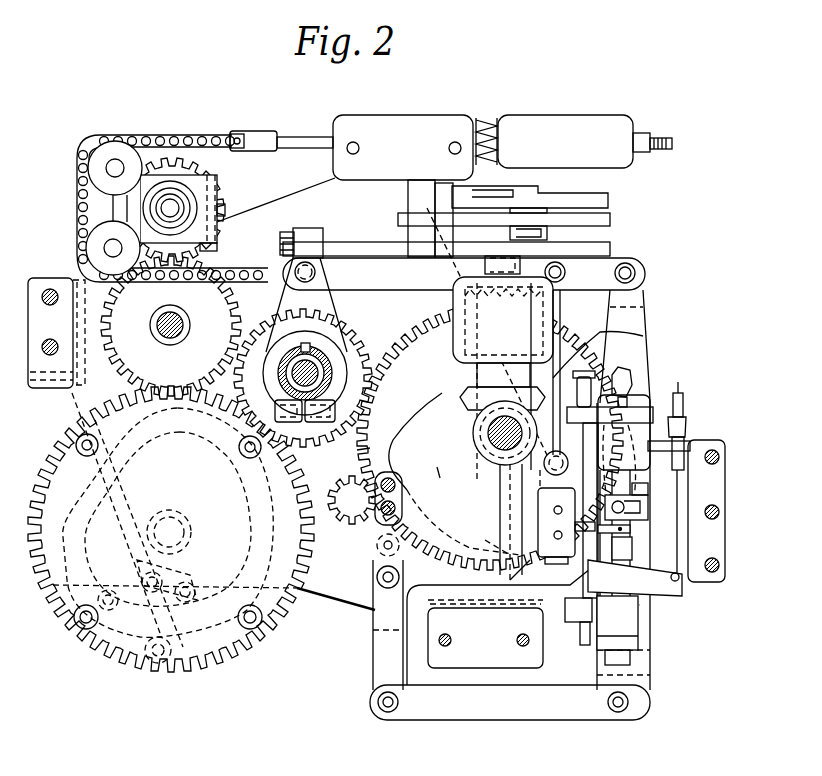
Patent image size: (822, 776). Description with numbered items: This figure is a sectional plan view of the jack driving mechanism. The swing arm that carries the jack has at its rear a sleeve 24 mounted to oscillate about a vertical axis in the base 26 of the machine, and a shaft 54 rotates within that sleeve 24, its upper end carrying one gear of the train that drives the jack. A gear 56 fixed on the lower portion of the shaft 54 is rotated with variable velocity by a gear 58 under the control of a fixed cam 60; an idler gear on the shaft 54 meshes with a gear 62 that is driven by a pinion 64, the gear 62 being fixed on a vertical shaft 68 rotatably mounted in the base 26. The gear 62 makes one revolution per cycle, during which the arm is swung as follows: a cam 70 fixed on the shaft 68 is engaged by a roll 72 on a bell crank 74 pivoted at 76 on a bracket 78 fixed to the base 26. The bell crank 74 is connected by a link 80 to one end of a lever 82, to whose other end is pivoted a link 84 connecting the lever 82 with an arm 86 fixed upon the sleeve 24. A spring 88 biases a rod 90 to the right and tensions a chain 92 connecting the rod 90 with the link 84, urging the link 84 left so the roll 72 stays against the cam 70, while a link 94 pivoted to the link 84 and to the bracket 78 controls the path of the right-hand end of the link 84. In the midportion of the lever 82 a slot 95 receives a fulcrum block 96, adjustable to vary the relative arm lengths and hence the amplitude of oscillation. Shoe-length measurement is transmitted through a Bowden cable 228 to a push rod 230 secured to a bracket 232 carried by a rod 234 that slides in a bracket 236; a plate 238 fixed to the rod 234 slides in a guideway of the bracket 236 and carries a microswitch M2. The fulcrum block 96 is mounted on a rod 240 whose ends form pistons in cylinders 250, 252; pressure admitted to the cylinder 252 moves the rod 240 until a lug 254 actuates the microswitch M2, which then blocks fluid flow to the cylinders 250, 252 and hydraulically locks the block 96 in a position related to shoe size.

The sleeve 24 is at (313, 360).
The base 26 is at (87, 398).
The shaft 54 is at (301, 368).
The gear 56 is at (378, 328).
The gear 58 is at (205, 672).
The fixed cam 60 is at (62, 591).
The gear 62 is at (357, 450).
The pinion 64 is at (348, 519).
The vertical shaft 68 is at (487, 432).
The cam 70 is at (442, 393).
The roll 72 is at (488, 540).
The bell crank 74 is at (374, 647).
The pivot 76 is at (372, 554).
The bracket 78 is at (437, 467).
The link 80 is at (538, 709).
The lever 82 is at (642, 301).
The link 84 is at (605, 267).
The arm 86 is at (316, 276).
The spring 88 is at (489, 119).
The rod 90 is at (303, 137).
The chain 92 is at (75, 199).
The link 94 is at (575, 336).
The slot 95 is at (650, 606).
The fulcrum block 96 is at (630, 526).
The Bowden cable 228 is at (678, 390).
The push rod 230 is at (680, 506).
The bracket 232 is at (662, 586).
The rod 234 is at (592, 382).
The bracket 236 is at (485, 634).
The plate 238 is at (532, 582).
The rod 240 is at (620, 542).
The cylinder 250 is at (627, 612).
The cylinder 252 is at (653, 417).
The lug 254 is at (627, 526).
The microswitch M2 is at (548, 510).